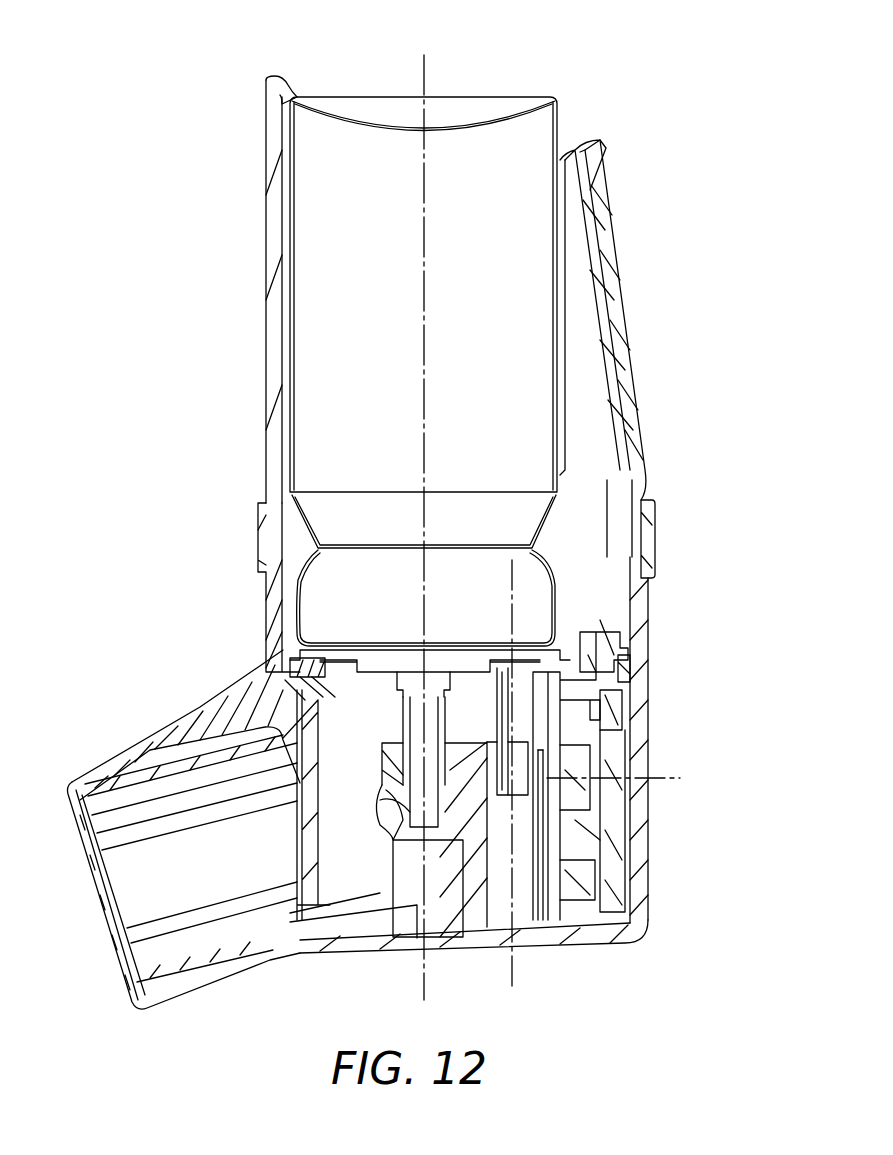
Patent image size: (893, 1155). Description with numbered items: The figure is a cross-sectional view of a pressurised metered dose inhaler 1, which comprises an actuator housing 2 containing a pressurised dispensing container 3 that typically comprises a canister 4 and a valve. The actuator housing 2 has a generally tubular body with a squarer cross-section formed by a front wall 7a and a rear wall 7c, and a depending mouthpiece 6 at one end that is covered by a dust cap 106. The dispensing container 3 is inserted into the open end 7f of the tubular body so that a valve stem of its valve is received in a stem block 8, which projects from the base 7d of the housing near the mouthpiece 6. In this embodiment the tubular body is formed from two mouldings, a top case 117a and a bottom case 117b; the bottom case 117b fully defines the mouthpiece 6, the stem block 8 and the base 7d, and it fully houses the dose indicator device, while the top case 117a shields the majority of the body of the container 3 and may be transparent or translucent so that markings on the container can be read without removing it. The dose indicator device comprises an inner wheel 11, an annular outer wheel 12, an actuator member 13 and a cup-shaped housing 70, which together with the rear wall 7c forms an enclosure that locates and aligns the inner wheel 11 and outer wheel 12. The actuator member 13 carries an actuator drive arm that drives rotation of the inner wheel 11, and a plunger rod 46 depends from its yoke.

The pressurised metered dose inhaler 1 is at (683, 108).
The actuator housing 2 is at (214, 217).
The pressurised dispensing container 3 is at (582, 106).
The canister 4 is at (490, 118).
The mouthpiece 6 is at (92, 973).
The front wall 7a is at (262, 386).
The rear wall 7c is at (636, 396).
The base 7d is at (560, 945).
The open end 7f is at (281, 66).
The stem block 8 is at (384, 754).
The inner wheel 11 is at (632, 706).
The annular outer wheel 12 is at (636, 662).
The actuator member 13 is at (316, 662).
The plunger rod 46 is at (512, 708).
The cup-shaped housing 70 is at (598, 640).
The dust cap 106 is at (158, 723).
The top case 117a is at (638, 258).
The bottom case 117b is at (678, 524).